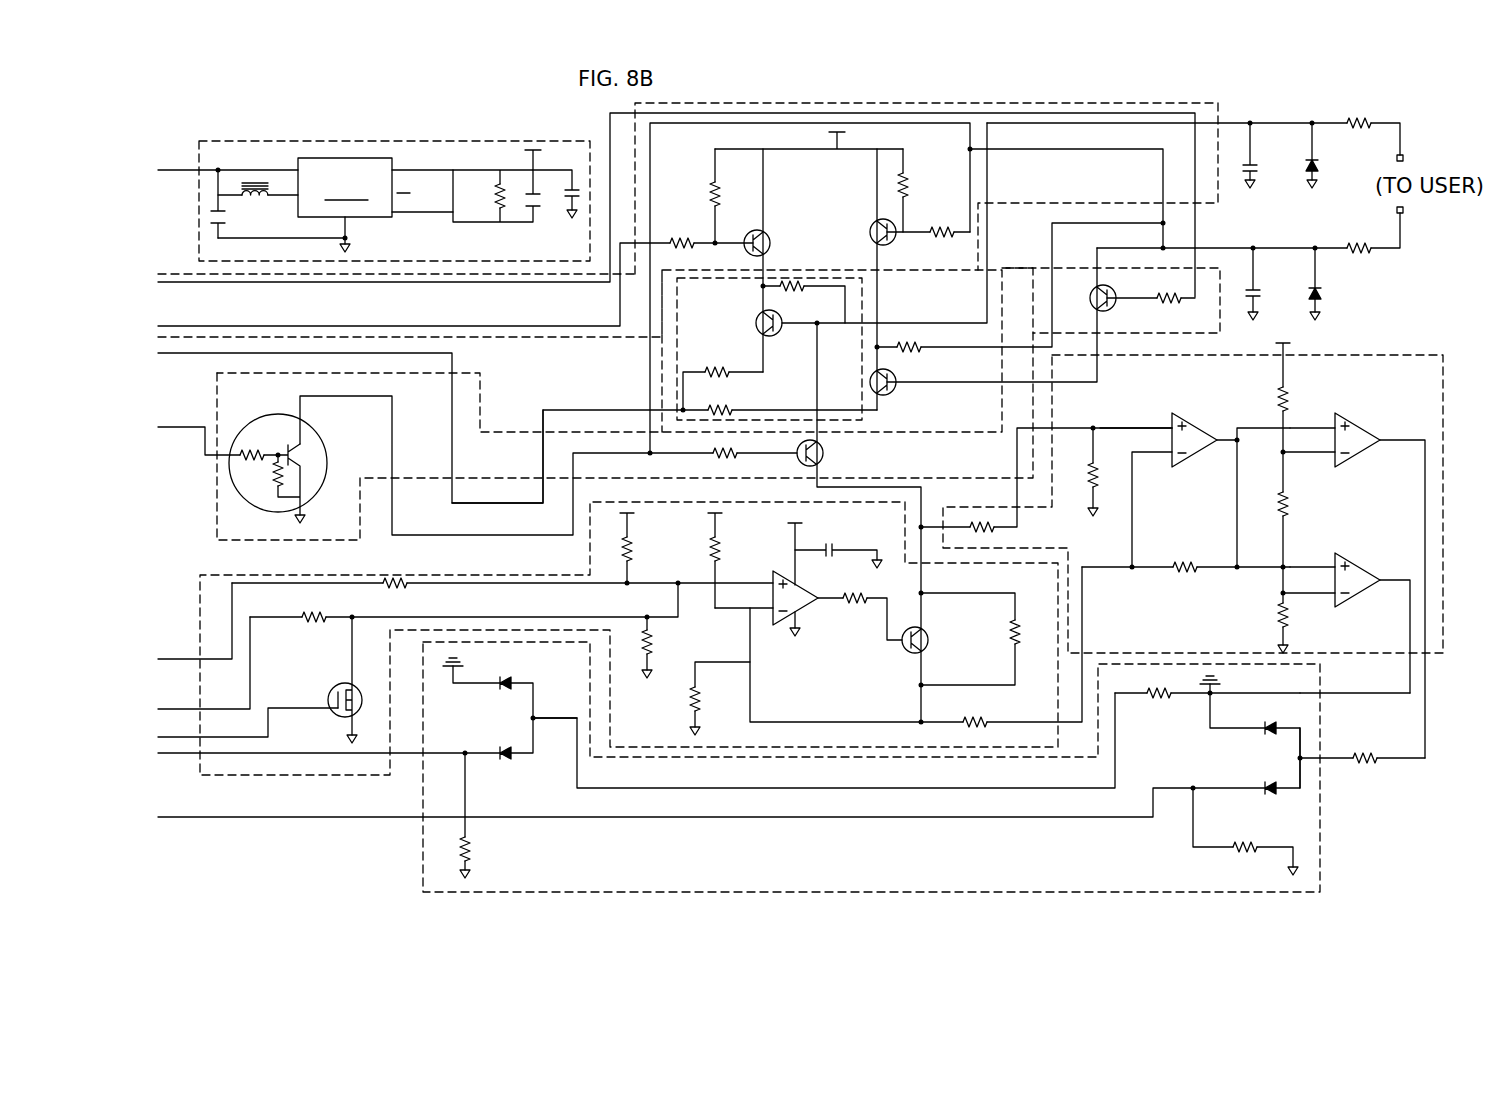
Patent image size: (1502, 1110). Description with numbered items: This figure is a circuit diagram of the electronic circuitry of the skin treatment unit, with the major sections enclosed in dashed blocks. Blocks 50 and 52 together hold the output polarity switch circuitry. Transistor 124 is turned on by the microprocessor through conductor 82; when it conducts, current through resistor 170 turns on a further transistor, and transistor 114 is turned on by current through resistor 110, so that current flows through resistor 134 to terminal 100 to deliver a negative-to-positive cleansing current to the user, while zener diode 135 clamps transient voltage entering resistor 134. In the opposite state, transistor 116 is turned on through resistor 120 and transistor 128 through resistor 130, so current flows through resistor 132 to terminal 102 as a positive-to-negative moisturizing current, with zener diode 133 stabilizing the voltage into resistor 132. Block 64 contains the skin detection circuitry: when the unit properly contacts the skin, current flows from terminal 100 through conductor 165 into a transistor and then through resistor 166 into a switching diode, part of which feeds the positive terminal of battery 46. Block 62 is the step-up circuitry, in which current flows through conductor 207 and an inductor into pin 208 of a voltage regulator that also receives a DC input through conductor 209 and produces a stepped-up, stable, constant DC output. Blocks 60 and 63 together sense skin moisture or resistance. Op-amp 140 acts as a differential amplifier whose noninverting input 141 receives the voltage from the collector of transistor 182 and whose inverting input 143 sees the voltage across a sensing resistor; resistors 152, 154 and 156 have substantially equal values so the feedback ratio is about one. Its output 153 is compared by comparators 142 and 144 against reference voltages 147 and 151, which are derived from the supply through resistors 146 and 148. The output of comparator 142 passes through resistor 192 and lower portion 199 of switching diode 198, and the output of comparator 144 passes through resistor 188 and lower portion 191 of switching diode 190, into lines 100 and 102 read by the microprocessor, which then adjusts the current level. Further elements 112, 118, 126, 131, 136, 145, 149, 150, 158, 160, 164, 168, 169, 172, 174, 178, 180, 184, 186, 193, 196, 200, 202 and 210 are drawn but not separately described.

The battery 46 is at (1218, 680).
The dash-dot block 50 is at (1000, 97).
The dash-dot block 52 is at (1030, 267).
The block 60 is at (1418, 355).
The block 62 is at (497, 140).
The block 63 is at (1323, 842).
The block 64 is at (862, 318).
The conductor 82 is at (170, 427).
The terminal 100 is at (1423, 160).
The terminal 102 is at (1423, 212).
The resistor 110 is at (938, 231).
The resistor 112 is at (908, 185).
The transistor 114 is at (866, 232).
The transistor 116 is at (772, 243).
The resistor 118 is at (712, 188).
The resistor 120 is at (682, 242).
The transistor 124 is at (245, 500).
The transistor 126 is at (823, 447).
The transistor 128 is at (1090, 298).
The resistor 130 is at (1167, 305).
The capacitor 131 is at (1278, 282).
The resistor 132 is at (1370, 250).
The zener diode 133 is at (1326, 297).
The resistor 134 is at (1360, 119).
The zener diode 135 is at (1316, 170).
The capacitor 136 is at (1253, 168).
The operational amplifier 140 is at (1194, 457).
The noninverting input 141 is at (1150, 425).
The op-amp/comparator 142 is at (1365, 456).
The inverting input 143 is at (1152, 455).
The op-amp/comparator 144 is at (1366, 566).
The non-inverting input 145 is at (1320, 425).
The resistor 146 is at (1290, 395).
The reference voltage 147 is at (1297, 455).
The resistor 148 is at (1297, 510).
The non-inverting input 149 is at (1305, 560).
The resistor 150 is at (1275, 617).
The reference voltage 151 is at (1305, 594).
The resistor 152 is at (1188, 580).
The output 153 is at (1228, 440).
The resistor 154 is at (1095, 470).
The resistor 156 is at (1000, 540).
The resistor 158 is at (920, 350).
The transistor 160 is at (894, 390).
The resistor 164 is at (792, 290).
The conductor 165 is at (976, 318).
The resistor 166 is at (718, 370).
The resistor 168 is at (718, 405).
The sensor signal line 169 is at (528, 500).
The resistor 170 is at (723, 443).
The resistor 172 is at (632, 552).
The resistor 174 is at (720, 553).
The operational amplifier 178 is at (822, 617).
The resistor 180 is at (860, 606).
The transistor 182 is at (930, 648).
The resistor 184 is at (700, 705).
The resistor 186 is at (652, 643).
The resistor 188 is at (1363, 766).
The switching diode 190 is at (1302, 745).
The lower portion 191 is at (1285, 785).
The resistor 192 is at (1158, 700).
The diode 193 is at (1295, 728).
The resistor 196 is at (1235, 857).
The switching diode 198 is at (479, 757).
The lower portion 199 is at (474, 683).
The resistor 200 is at (470, 847).
The field effect transistor 202 is at (335, 688).
The conductor 207 is at (217, 176).
The pin 208 is at (297, 203).
The conductor 209 is at (248, 168).
The output filter 210 is at (427, 167).